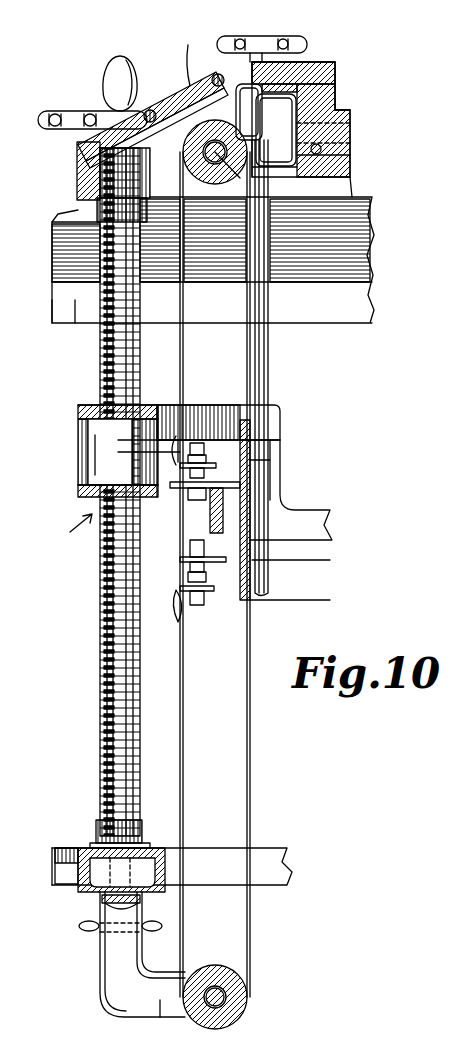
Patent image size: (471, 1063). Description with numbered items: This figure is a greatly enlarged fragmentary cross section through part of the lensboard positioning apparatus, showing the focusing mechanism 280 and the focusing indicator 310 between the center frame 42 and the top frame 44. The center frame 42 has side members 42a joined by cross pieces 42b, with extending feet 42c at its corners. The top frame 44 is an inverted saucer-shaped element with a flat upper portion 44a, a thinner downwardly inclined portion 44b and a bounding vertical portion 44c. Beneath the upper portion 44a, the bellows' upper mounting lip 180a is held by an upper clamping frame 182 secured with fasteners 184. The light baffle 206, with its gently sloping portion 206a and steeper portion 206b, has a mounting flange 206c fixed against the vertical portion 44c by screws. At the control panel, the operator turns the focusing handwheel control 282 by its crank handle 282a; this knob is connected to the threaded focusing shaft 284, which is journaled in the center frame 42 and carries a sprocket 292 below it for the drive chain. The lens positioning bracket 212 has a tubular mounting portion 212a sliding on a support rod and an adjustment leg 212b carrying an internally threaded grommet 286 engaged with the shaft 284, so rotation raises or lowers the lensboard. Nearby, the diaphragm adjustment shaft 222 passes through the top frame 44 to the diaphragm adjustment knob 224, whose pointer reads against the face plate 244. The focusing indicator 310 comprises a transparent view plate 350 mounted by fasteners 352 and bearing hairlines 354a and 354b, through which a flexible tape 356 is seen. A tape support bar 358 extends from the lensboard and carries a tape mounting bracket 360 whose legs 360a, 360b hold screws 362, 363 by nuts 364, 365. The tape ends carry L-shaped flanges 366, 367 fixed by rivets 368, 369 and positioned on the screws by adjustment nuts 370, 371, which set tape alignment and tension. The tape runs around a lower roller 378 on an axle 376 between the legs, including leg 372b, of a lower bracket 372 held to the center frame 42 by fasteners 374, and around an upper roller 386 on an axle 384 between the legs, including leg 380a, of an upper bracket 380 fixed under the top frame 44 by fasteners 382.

The center frame 42 is at (290, 876).
The side members 42a is at (287, 855).
The cross pieces 42b is at (78, 880).
The extending feet 42c is at (72, 848).
The top frame 44 is at (350, 112).
The upper portion 44a is at (335, 70).
The inclined portion 44b is at (255, 36).
The vertical portion 44c is at (77, 185).
The upper mounting lip 180a is at (350, 124).
The upper clamping frame 182 is at (350, 143).
The fasteners 184 is at (350, 158).
The light baffle 206 is at (364, 250).
The gently inclined sloping portion 206a is at (62, 218).
The steeply inclined portion 206b is at (75, 323).
The mounting flange 206c is at (96, 205).
The lens positioning bracket 212 is at (280, 418).
The tubular mounting portion 212a is at (80, 408).
The adjustment leg 212b is at (80, 428).
The diaphragm adjustment shaft 222 is at (268, 370).
The diaphragm adjustment knob 224 is at (290, 62).
The face plate 244 is at (310, 62).
The focusing mechanism 280 is at (57, 531).
The focusing handwheel control 282 is at (78, 108).
The crank handle 282a is at (118, 56).
The focusing shaft 284 is at (100, 686).
The internally threaded grommet 286 is at (80, 490).
The sprocket 292 is at (80, 928).
The focusing indicator 310 is at (352, 594).
The transparent view plate 350 is at (188, 70).
The fasteners 352 is at (152, 110).
The hairline 354a is at (204, 40).
The hairline 354b is at (248, 100).
The flexible tape 356 is at (183, 338).
The tape support bar 358 is at (210, 510).
The tape mounting bracket 360 is at (250, 498).
The leg 360a is at (250, 470).
The leg 360b is at (262, 578).
The screw 362 is at (197, 443).
The screw 363 is at (206, 577).
The nut 364 is at (185, 480).
The nut 365 is at (188, 558).
The L-shaped flange 366 is at (118, 452).
The L-shaped flange 367 is at (176, 605).
The rivet 368 is at (176, 436).
The rivet 369 is at (190, 568).
The adjustment nut 370 is at (250, 450).
The adjustment nut 371 is at (210, 605).
The lower bracket 372 is at (108, 964).
The leg 372b is at (160, 1007).
The fasteners 374 is at (102, 905).
The axle 376 is at (224, 993).
The lower roller 378 is at (245, 1010).
The upper bracket 380 is at (335, 68).
The leg 380a is at (354, 192).
The fasteners 382 is at (297, 90).
The axle 384 is at (246, 178).
The upper roller 386 is at (198, 172).